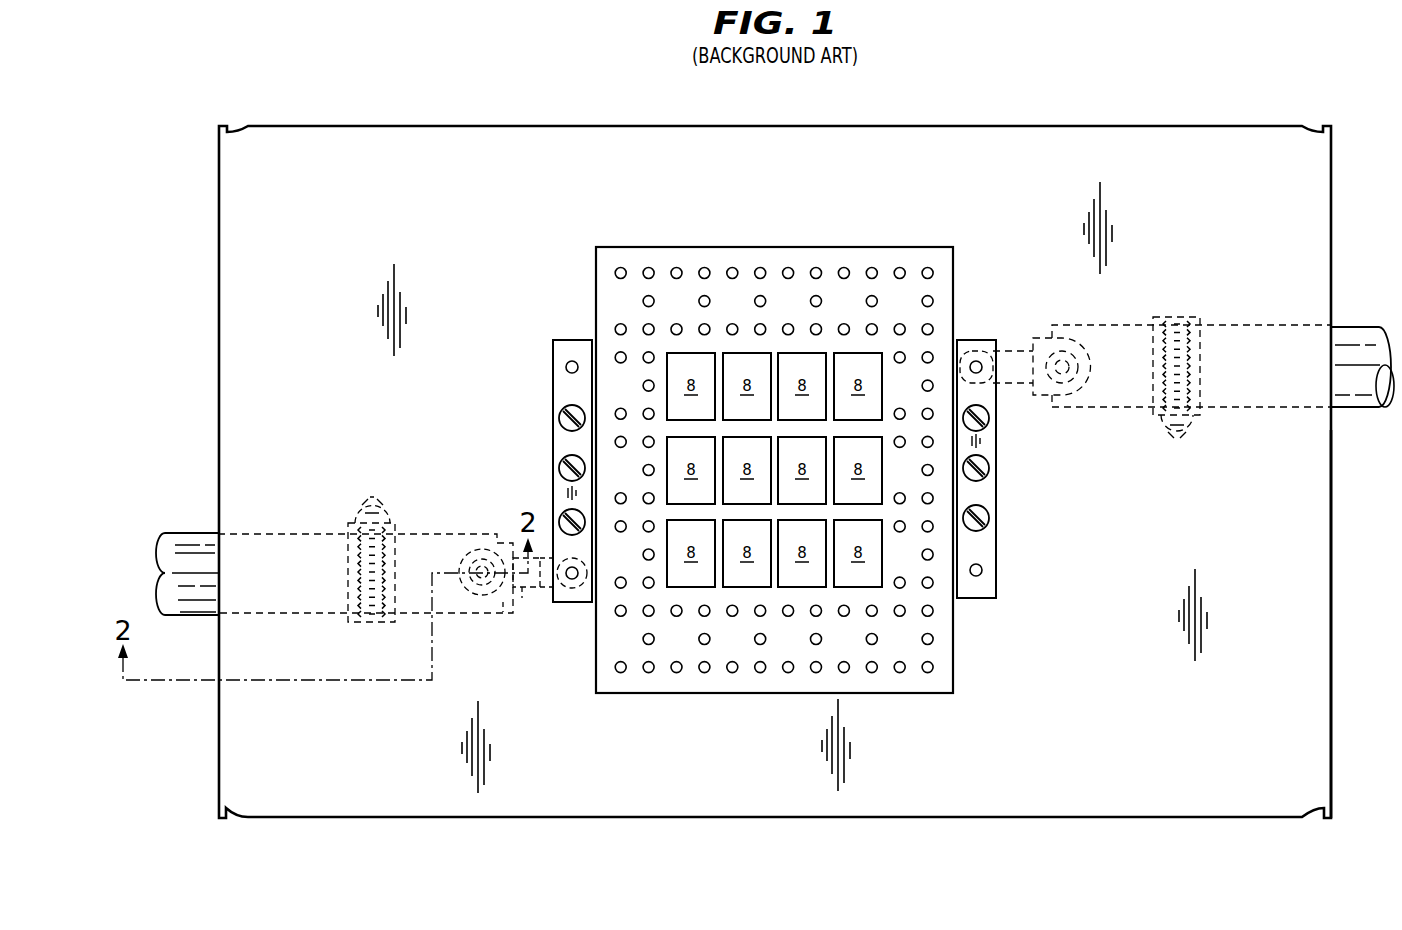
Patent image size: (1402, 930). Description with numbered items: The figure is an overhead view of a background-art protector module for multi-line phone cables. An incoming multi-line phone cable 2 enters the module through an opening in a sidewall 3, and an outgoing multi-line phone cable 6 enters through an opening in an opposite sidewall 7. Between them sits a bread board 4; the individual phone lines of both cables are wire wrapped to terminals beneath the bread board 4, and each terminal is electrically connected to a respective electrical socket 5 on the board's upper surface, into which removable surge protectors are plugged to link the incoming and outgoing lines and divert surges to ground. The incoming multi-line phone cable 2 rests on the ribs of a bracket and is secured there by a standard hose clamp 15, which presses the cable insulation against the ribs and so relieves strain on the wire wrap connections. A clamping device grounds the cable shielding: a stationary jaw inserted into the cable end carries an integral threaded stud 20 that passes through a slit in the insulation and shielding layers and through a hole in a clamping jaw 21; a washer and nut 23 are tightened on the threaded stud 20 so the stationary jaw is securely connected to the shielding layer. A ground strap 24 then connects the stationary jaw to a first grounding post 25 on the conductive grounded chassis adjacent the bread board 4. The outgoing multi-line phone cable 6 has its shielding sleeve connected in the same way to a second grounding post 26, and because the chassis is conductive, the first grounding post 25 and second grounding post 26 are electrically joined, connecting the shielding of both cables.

The incoming multi-line phone cable 2 is at (183, 533).
The sidewall 3 is at (219, 312).
The bread board 4 is at (857, 247).
The electrical socket 5 is at (730, 322).
The outgoing multi-line phone cable 6 is at (1352, 327).
The opposite sidewall 7 is at (1332, 561).
The hose clamp 15 is at (349, 527).
The threaded stud 20 is at (480, 600).
The clamping jaw 21 is at (508, 600).
The nut 23 is at (473, 535).
The ground strap 24 is at (521, 592).
The first grounding post 25 is at (564, 393).
The second grounding post 26 is at (980, 546).